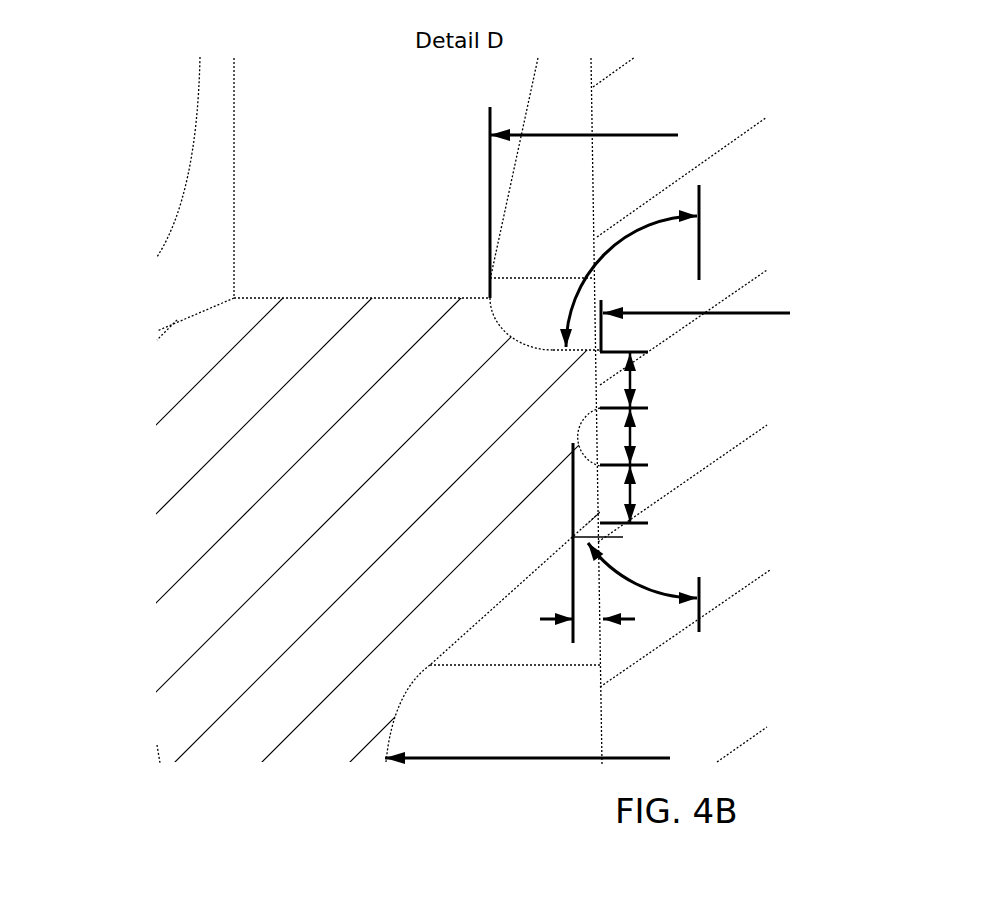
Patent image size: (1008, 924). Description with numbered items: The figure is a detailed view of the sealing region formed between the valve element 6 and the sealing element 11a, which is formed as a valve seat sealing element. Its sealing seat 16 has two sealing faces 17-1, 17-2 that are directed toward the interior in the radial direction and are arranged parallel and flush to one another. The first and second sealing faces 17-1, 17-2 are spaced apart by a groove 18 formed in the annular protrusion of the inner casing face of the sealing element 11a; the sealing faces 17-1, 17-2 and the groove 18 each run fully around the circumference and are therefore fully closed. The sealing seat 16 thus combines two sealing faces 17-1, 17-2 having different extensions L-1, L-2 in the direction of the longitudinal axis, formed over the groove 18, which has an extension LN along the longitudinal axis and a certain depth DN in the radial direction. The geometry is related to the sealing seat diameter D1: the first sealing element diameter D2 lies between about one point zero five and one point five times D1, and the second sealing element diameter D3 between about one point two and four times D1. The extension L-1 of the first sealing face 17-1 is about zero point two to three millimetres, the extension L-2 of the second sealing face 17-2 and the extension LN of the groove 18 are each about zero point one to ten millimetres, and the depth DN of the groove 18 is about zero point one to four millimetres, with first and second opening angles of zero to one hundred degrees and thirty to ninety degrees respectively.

The sealing element 11a is at (223, 217).
The sealing seat 16 is at (543, 410).
The groove 18 is at (595, 437).
The valve element 6 is at (732, 252).
The first sealing element diameter D2 is at (678, 135).
The sealing seat diameter D1 is at (730, 311).
The second sealing element diameter D3 is at (660, 757).
The depth of the groove DN is at (590, 622).
The extension of the first sealing face L-1 is at (630, 382).
The extension of the groove LN is at (630, 438).
The extension of the second sealing face L-2 is at (630, 495).
The first sealing face 17-1 is at (600, 362).
The second sealing face 17-2 is at (592, 513).